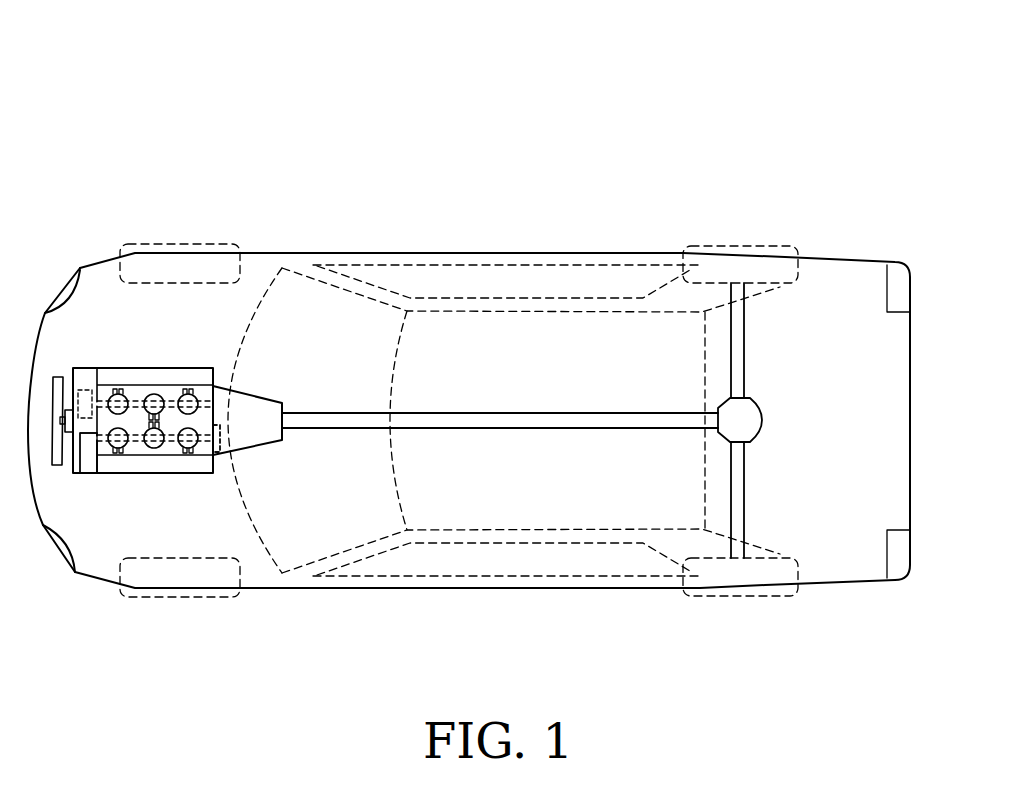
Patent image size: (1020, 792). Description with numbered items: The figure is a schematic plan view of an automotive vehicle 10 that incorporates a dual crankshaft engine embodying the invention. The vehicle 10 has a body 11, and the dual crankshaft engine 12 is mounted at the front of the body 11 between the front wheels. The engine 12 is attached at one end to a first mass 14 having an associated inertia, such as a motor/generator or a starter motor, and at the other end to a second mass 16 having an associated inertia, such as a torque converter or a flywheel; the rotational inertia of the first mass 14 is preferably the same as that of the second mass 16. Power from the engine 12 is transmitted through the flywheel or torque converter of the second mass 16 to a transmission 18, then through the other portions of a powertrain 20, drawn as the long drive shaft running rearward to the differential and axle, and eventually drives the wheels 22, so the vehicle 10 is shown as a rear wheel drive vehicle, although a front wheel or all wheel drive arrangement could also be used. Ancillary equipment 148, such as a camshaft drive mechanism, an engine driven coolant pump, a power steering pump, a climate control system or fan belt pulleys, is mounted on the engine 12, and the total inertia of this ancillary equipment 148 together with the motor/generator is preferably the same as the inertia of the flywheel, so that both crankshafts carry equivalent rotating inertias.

The automotive vehicle 10 is at (453, 128).
The body 11 is at (597, 253).
The dual crankshaft engine 12 is at (154, 365).
The first mass 14 is at (84, 388).
The second mass 16 is at (220, 437).
The transmission 18 is at (258, 410).
The powertrain 20 is at (477, 420).
The wheels 22 is at (744, 246).
The ancillary equipment 148 is at (90, 458).